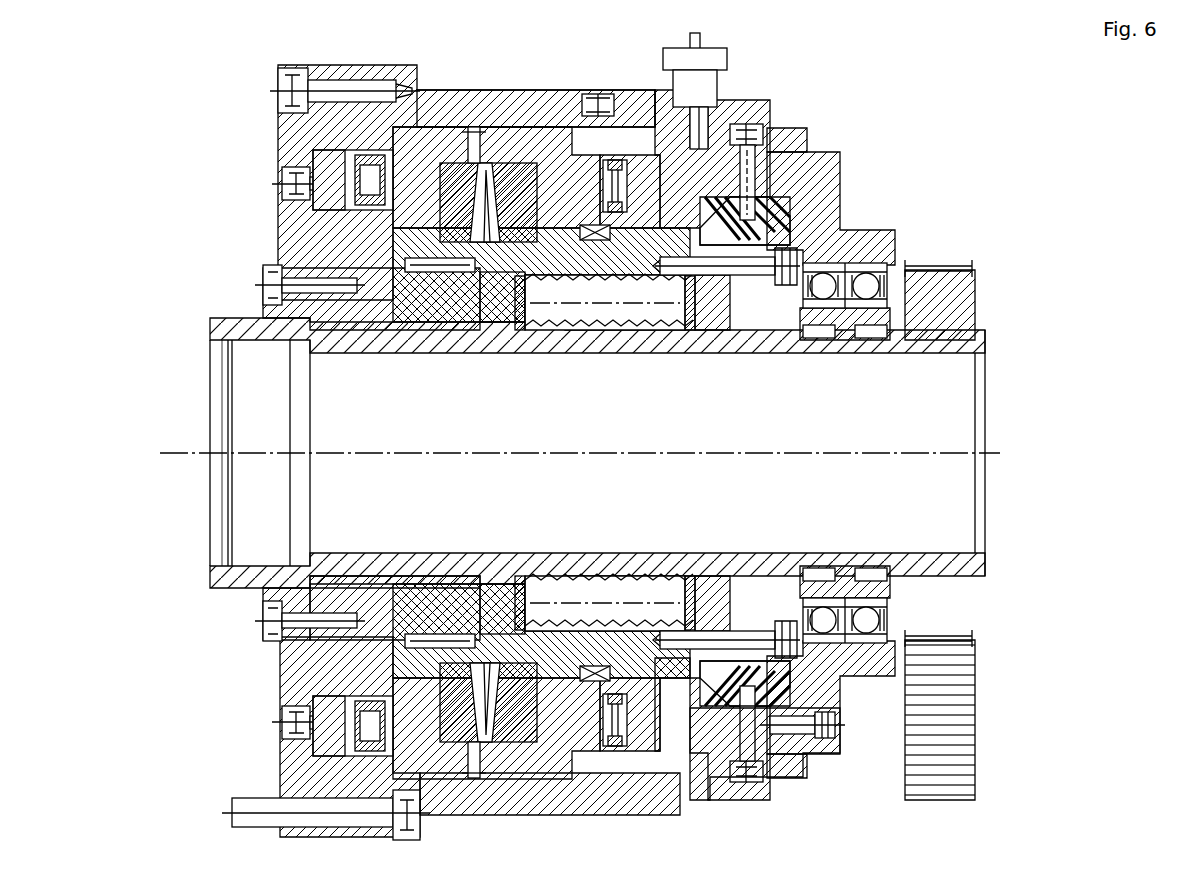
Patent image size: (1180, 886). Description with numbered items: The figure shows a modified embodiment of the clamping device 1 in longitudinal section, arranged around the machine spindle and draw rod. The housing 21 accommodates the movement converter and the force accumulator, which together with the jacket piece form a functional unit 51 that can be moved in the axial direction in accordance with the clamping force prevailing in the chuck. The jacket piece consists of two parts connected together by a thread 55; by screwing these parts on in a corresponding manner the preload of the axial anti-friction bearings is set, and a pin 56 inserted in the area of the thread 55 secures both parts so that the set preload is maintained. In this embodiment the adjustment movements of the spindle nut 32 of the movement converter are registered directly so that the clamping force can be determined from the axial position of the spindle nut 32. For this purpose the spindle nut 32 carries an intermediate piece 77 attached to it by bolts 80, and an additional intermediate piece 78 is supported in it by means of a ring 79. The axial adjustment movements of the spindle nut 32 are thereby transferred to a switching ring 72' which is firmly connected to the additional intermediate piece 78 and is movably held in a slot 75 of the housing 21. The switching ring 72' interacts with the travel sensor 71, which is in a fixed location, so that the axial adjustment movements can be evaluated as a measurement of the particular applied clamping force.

The clamping device 1 is at (145, 810).
The functional unit 51 is at (441, 63).
The housing 21 is at (558, 90).
The thread 55 is at (490, 142).
The pin 56 is at (458, 140).
The travel sensor 71 is at (657, 85).
The slot 75 is at (720, 140).
The switching ring 72' is at (799, 421).
The additional intermediate piece 78 is at (772, 205).
The ring 79 is at (790, 228).
The bolts 80 is at (806, 262).
The intermediate piece 77 is at (745, 302).
The spindle nut 32 is at (677, 700).